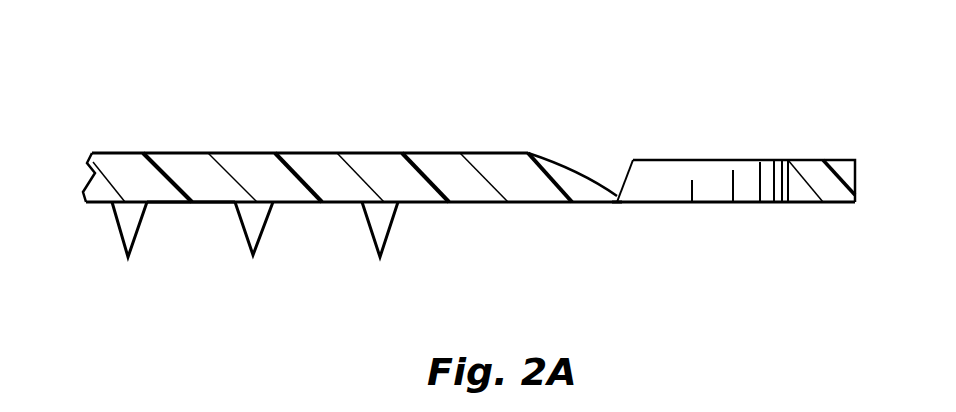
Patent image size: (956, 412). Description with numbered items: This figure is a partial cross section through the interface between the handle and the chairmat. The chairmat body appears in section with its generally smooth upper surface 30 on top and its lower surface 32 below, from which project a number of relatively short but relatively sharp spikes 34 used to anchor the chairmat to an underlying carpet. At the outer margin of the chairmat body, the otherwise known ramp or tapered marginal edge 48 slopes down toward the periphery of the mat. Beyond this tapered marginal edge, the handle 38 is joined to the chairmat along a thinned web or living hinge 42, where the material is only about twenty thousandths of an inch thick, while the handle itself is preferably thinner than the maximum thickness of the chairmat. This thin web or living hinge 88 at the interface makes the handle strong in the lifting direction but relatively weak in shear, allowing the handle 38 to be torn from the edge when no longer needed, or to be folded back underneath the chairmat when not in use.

The upper surface 30 is at (200, 160).
The lower surface 32 is at (200, 203).
The spikes 34 is at (267, 223).
The handle 38 is at (700, 147).
The thinned web 42 is at (617, 195).
The tapered marginal edge 48 is at (553, 160).
The thin web 88 is at (617, 203).